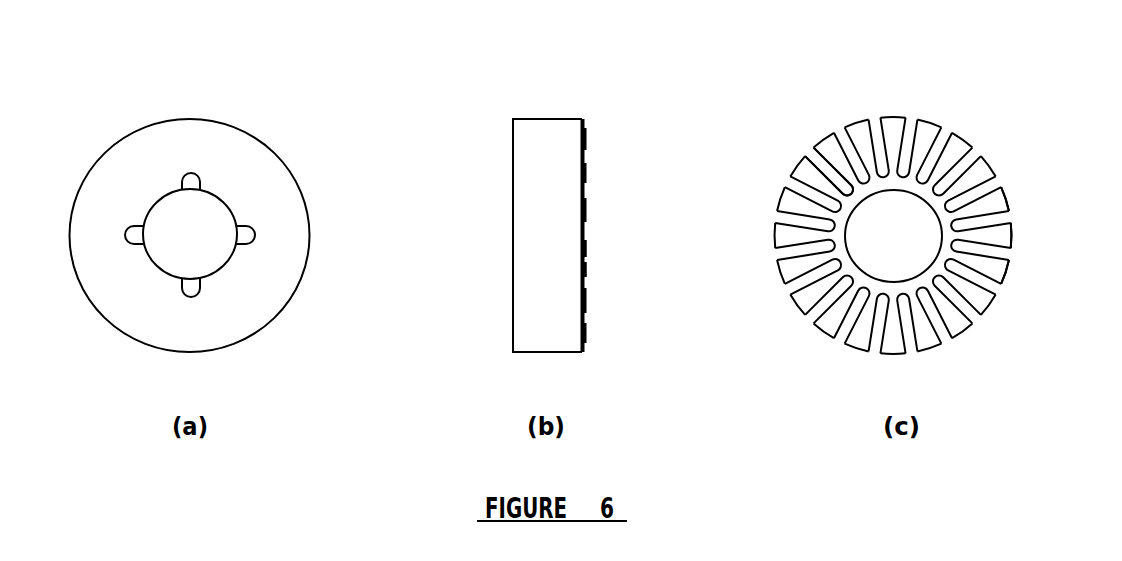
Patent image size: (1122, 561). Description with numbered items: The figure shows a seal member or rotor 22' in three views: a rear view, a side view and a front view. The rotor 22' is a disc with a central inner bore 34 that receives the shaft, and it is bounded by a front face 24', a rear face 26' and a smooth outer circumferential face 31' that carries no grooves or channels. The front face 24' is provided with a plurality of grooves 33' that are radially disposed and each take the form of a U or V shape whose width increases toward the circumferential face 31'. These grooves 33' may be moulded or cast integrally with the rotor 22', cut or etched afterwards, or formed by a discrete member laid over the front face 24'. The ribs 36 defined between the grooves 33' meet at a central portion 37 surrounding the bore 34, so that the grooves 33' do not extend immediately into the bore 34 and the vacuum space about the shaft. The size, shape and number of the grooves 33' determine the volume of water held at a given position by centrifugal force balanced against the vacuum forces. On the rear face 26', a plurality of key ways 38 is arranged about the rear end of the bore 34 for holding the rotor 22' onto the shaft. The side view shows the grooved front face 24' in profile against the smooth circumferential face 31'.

The seal member or rotor 22' is at (924, 156).
The front face 24' is at (841, 235).
The rear face 26' is at (326, 216).
The circumferential face 31' is at (547, 202).
The grooves 33' is at (813, 224).
The inner bore 34 is at (200, 227).
The ribs 36 is at (583, 235).
The central portion 37 is at (843, 177).
The key ways 38 is at (191, 173).